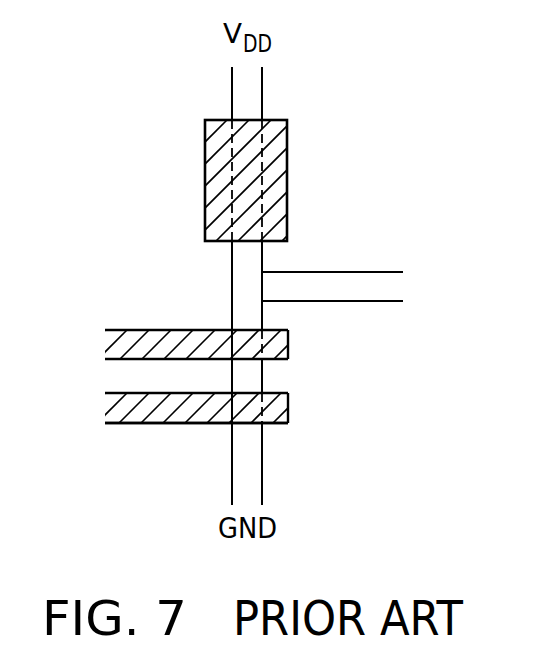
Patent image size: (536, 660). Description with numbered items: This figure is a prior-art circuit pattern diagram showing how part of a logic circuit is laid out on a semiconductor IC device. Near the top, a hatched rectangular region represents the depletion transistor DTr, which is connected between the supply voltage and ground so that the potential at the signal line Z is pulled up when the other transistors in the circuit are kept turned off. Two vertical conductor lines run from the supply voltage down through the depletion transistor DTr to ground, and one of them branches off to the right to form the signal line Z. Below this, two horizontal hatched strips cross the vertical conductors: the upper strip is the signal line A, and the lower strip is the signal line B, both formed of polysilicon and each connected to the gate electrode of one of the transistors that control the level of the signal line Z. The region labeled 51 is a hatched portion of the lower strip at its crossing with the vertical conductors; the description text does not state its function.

The wiring layer (hatched conductor B) 51 is at (248, 406).
The depletion transistor DTr is at (287, 174).
The signal line Z is at (396, 291).
The signal line A is at (116, 336).
The signal line B is at (116, 399).